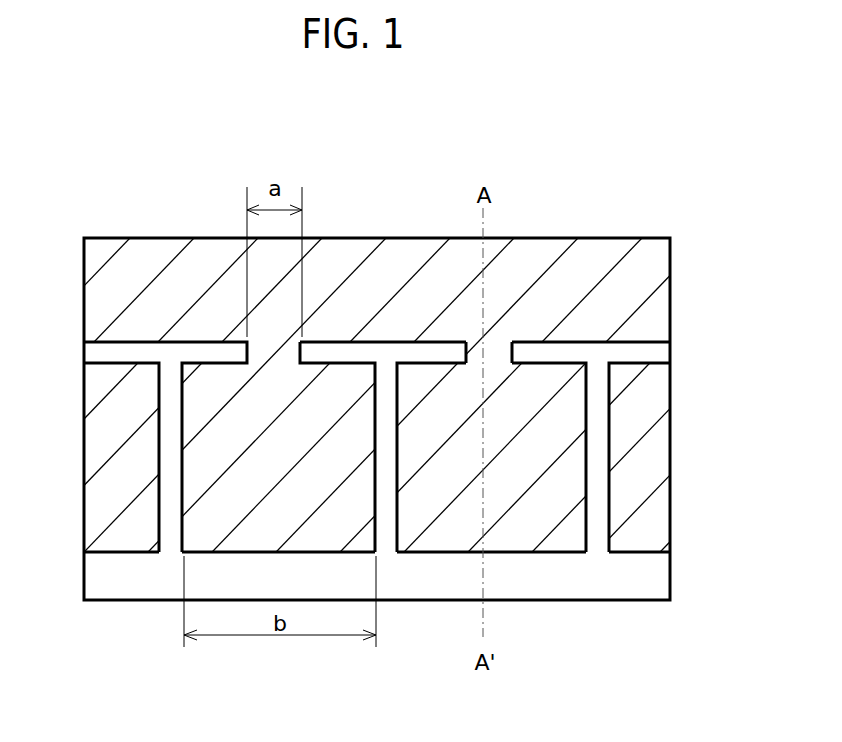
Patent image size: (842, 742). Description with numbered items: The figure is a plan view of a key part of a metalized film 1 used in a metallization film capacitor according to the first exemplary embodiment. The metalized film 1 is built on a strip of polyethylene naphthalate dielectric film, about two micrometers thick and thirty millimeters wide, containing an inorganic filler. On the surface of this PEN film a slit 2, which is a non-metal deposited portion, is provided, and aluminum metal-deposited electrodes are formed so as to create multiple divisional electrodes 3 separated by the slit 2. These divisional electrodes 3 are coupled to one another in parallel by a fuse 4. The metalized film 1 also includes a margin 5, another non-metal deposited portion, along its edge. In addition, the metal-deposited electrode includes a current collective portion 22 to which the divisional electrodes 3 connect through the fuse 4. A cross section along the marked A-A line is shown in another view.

The metalized film 1 is at (421, 237).
The slit 2 is at (168, 349).
The divisional electrodes 3 is at (250, 473).
The fuse 4 is at (489, 353).
The margin 5 is at (637, 579).
The current collective portion 22 is at (643, 272).